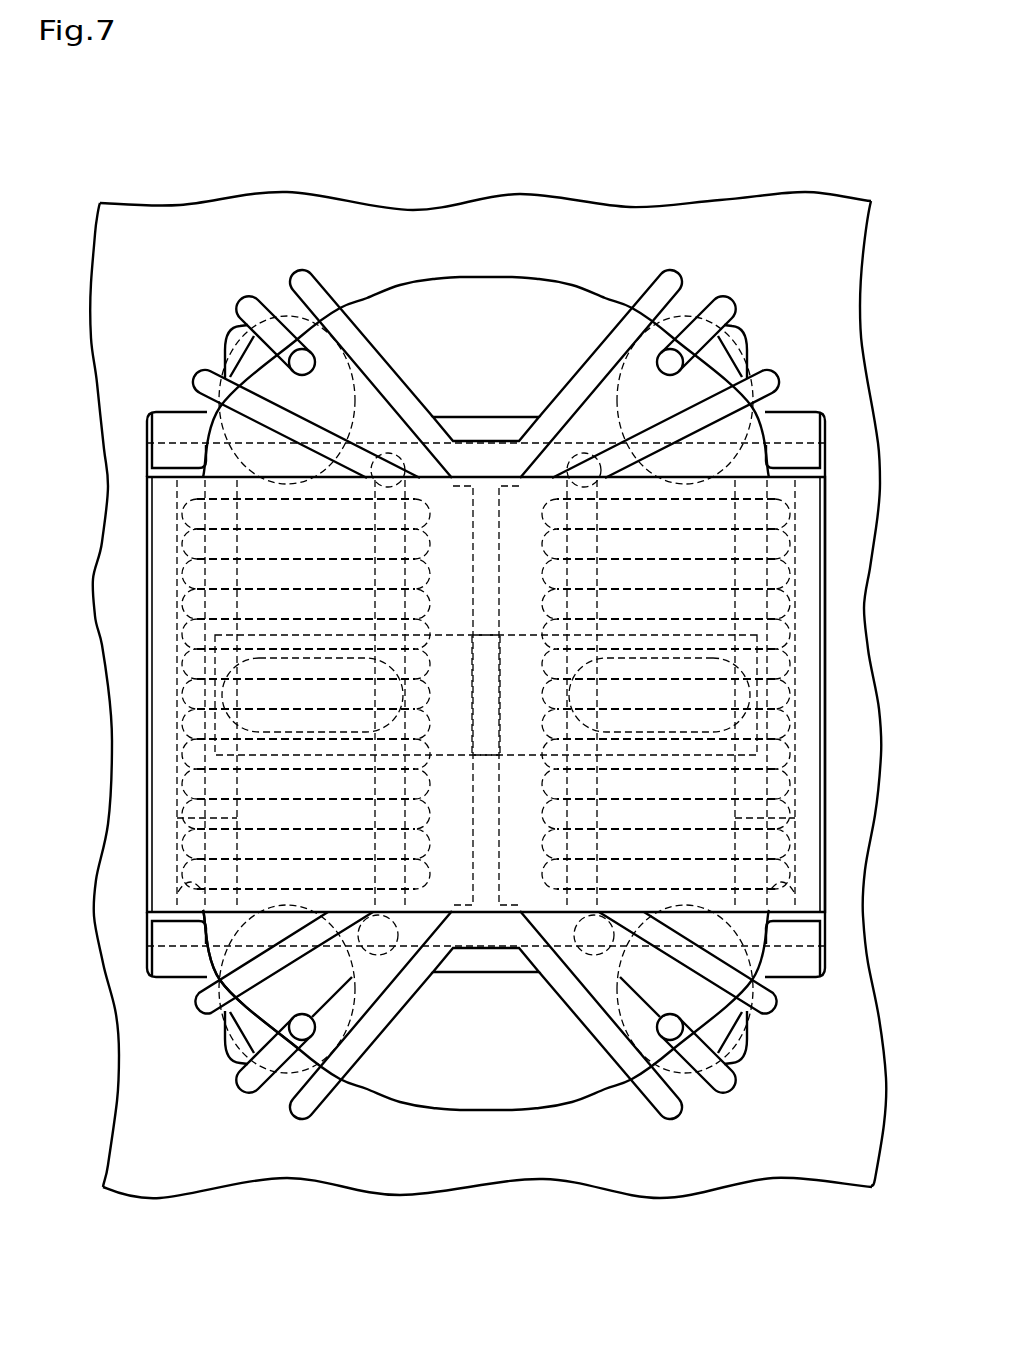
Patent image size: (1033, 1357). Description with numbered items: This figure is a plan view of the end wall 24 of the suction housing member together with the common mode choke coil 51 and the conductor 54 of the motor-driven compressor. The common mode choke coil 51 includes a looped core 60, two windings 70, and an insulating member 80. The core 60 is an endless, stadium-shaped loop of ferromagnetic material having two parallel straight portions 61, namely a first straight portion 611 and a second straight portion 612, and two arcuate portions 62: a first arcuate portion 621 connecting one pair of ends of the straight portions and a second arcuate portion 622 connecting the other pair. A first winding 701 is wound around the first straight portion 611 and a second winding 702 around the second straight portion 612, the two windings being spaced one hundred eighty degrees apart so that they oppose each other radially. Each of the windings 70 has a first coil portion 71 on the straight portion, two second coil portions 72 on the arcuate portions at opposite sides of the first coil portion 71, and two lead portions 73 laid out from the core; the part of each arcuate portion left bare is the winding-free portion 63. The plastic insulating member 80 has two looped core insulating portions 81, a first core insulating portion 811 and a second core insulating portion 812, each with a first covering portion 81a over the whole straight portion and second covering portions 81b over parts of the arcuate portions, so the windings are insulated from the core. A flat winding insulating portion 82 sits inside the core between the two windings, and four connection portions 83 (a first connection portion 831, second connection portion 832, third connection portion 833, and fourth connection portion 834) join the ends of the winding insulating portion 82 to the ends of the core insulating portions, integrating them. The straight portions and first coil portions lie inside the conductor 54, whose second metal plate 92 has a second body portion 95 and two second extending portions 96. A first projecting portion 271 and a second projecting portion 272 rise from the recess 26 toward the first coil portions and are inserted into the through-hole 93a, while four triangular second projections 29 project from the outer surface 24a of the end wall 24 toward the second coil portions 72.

The end wall 24 is at (488, 680).
The outer surface 24a is at (120, 240).
The common mode choke coil 51 is at (215, 281).
The core 60 is at (486, 700).
The arcuate portions 62 is at (486, 700).
The first arcuate portion 621 is at (497, 284).
The second arcuate portion 622 is at (497, 1112).
The winding-free portion 63 is at (532, 283).
The core insulating portions 81 is at (485, 538).
The first core insulating portion 811 is at (262, 292).
The second core insulating portion 812 is at (692, 298).
The first covering portion 81a is at (185, 892).
The second covering portions 81b is at (218, 437).
The connection portions 83 is at (513, 696).
The first connection portion 831 is at (297, 271).
The second connection portion 832 is at (678, 270).
The third connection portion 833 is at (318, 1105).
The fourth connection portion 834 is at (652, 1103).
The windings 70 is at (513, 1080).
The first winding 701 is at (247, 1102).
The second winding 702 is at (727, 1102).
The second coil portions 72 is at (196, 383).
The lead portions 73 is at (312, 353).
The second projections 29 is at (222, 358).
The insulating member 80 is at (210, 970).
The first coil portion 71 is at (197, 793).
The conductor 54 is at (144, 492).
The second body portion 95 is at (163, 519).
The second extending portions 96 is at (152, 546).
The second metal plate 92 is at (152, 569).
The recess 26 is at (808, 499).
The winding insulating portion 82 is at (500, 577).
The first projecting portion 271 is at (225, 658).
The second projecting portion 272 is at (747, 658).
The through-hole 93a is at (222, 700).
The straight portions 61 is at (489, 853).
The first straight portion 611 is at (197, 822).
The second straight portion 612 is at (775, 822).